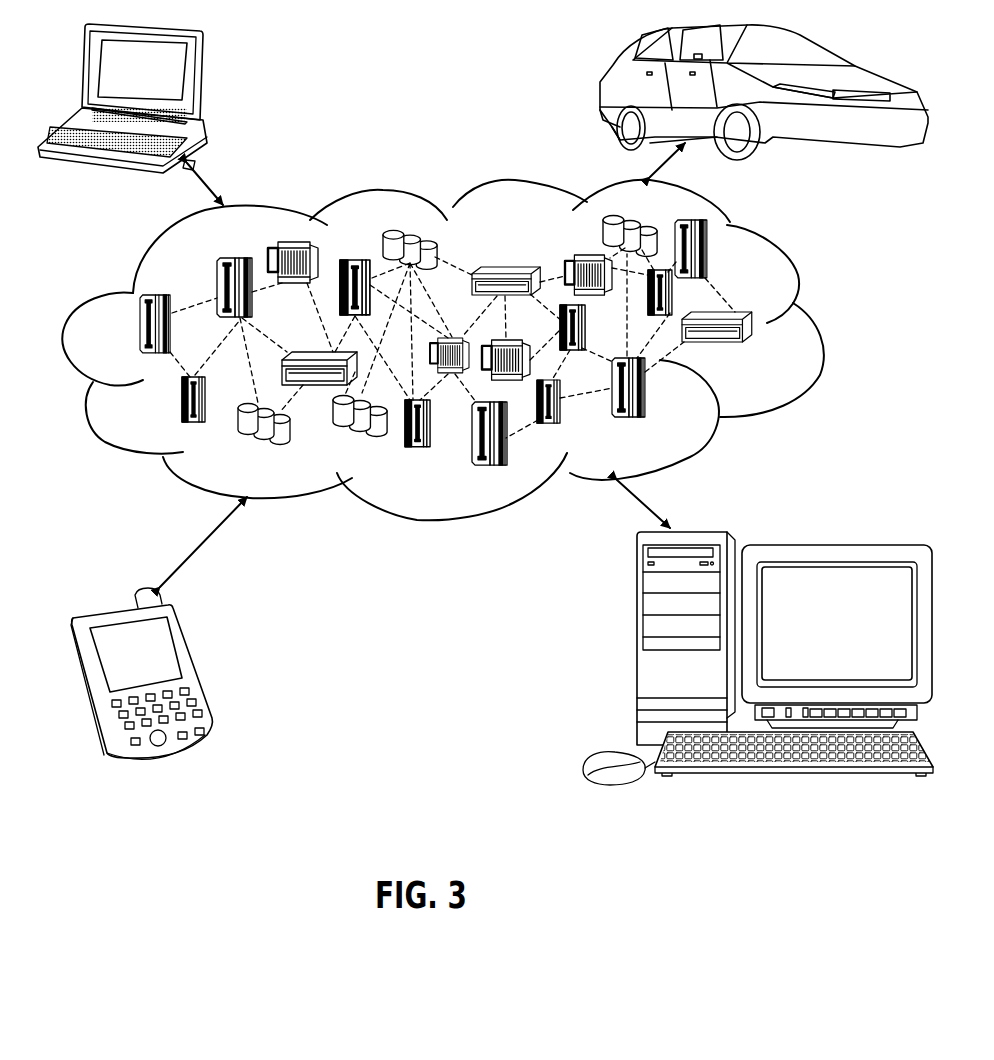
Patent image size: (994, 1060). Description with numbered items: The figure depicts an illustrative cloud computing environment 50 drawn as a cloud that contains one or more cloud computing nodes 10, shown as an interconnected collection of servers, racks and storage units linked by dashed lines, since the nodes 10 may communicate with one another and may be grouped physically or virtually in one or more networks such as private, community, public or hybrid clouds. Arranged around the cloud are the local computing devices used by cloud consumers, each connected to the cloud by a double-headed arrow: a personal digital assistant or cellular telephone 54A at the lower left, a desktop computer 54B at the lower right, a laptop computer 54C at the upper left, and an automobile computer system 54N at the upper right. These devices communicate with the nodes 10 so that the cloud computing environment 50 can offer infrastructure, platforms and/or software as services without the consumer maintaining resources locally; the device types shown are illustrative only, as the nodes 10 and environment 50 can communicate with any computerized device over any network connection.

The cloud computing nodes 10 is at (490, 365).
The cloud computing environment 50 is at (773, 347).
The personal digital assistant (PDA) or cellular telephone 54A is at (192, 665).
The desktop computer 54B is at (637, 648).
The laptop computer 54C is at (203, 75).
The automobile computer system 54N is at (608, 86).